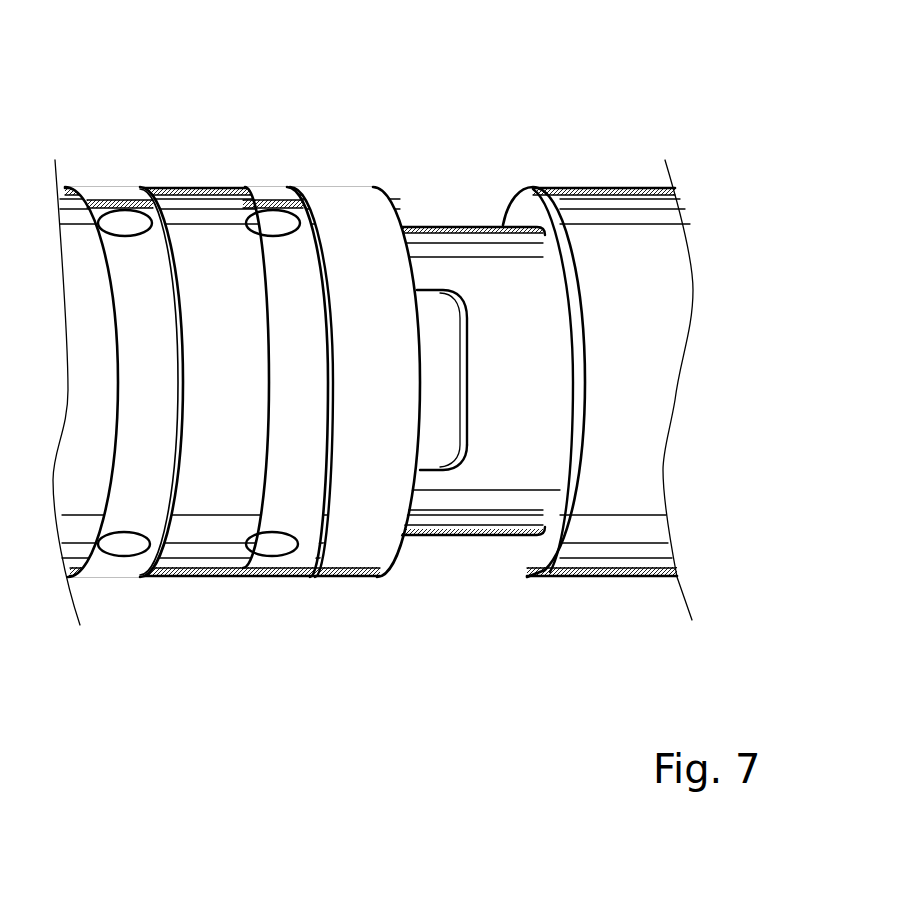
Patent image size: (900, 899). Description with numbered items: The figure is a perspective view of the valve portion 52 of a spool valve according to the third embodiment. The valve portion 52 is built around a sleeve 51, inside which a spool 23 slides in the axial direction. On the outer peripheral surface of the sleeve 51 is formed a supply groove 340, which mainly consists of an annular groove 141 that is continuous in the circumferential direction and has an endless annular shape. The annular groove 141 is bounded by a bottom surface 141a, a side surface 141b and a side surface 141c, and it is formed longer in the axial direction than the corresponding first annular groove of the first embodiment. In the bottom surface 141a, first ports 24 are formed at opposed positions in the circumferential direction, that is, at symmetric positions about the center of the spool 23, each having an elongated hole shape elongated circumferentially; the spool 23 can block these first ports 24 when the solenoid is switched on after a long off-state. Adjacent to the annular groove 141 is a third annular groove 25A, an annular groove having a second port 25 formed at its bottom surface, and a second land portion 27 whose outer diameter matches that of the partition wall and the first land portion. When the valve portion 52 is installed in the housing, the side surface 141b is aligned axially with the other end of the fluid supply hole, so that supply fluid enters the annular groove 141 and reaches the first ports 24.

The spool 23 is at (427, 445).
The first port 24 is at (437, 430).
The second port 25 is at (271, 205).
The third annular groove 25A is at (247, 186).
The second land portion 27 is at (342, 190).
The sleeve 51 is at (629, 160).
The valve portion 52 is at (616, 319).
The annular groove 141 is at (578, 378).
The supply groove 340 is at (578, 378).
The bottom surface 141a is at (560, 352).
The side surface 141b is at (573, 260).
The side surface 141c is at (401, 226).